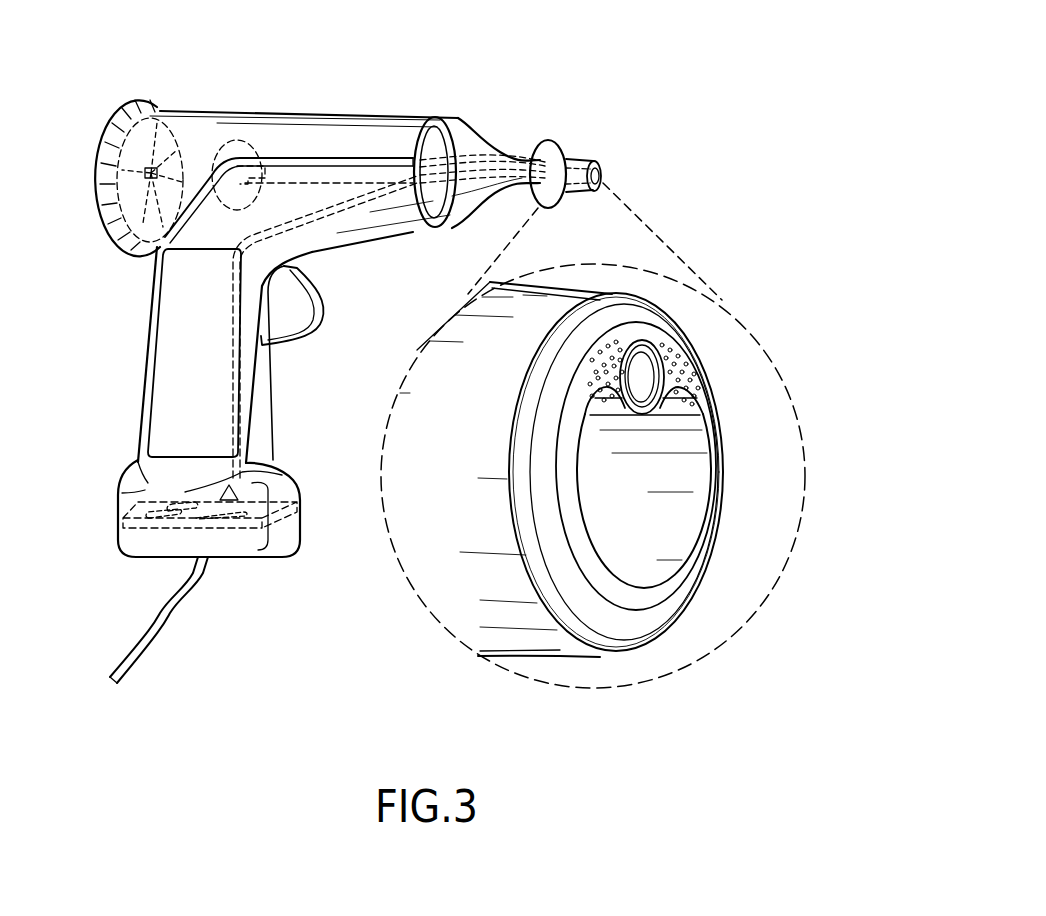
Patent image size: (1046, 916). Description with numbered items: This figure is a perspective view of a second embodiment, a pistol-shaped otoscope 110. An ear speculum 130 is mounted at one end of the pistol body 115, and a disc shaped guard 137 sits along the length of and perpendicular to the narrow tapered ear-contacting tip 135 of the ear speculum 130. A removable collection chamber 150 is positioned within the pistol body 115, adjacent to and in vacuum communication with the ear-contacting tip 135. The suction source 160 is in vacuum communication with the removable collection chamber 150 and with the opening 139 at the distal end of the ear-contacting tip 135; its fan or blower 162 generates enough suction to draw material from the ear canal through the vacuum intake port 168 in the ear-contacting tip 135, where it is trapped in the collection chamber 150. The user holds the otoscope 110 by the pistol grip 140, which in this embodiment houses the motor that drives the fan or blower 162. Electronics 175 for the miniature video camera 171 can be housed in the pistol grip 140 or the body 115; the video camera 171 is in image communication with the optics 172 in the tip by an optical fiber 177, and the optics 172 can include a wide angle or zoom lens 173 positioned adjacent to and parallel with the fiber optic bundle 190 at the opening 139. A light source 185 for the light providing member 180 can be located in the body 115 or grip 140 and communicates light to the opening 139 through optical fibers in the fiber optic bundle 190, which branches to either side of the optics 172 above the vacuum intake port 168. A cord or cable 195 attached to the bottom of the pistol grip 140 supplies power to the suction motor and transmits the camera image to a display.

The pistol-shaped otoscope 110 is at (714, 97).
The pistol body 115 is at (357, 252).
The ear speculum 130 is at (482, 142).
The ear-contacting tip 135 is at (538, 207).
The disc shaped guard 137 is at (547, 141).
The opening 139 is at (606, 174).
The pistol grip 140 is at (188, 395).
The removable collection chamber 150 is at (396, 126).
The suction source 160 is at (150, 140).
The fan or blower 162 is at (138, 212).
The vacuum intake port 168 is at (660, 478).
The miniature video camera 171 is at (232, 513).
The optics 172 is at (497, 177).
The wide angle or zoom lens 173 is at (632, 390).
The electronics 175 is at (150, 527).
The optical fiber 177 is at (294, 490).
The light providing member 180 is at (290, 175).
The light source 185 is at (270, 173).
The fiber optic bundle 190 is at (343, 172).
The cord or cable 195 is at (164, 622).